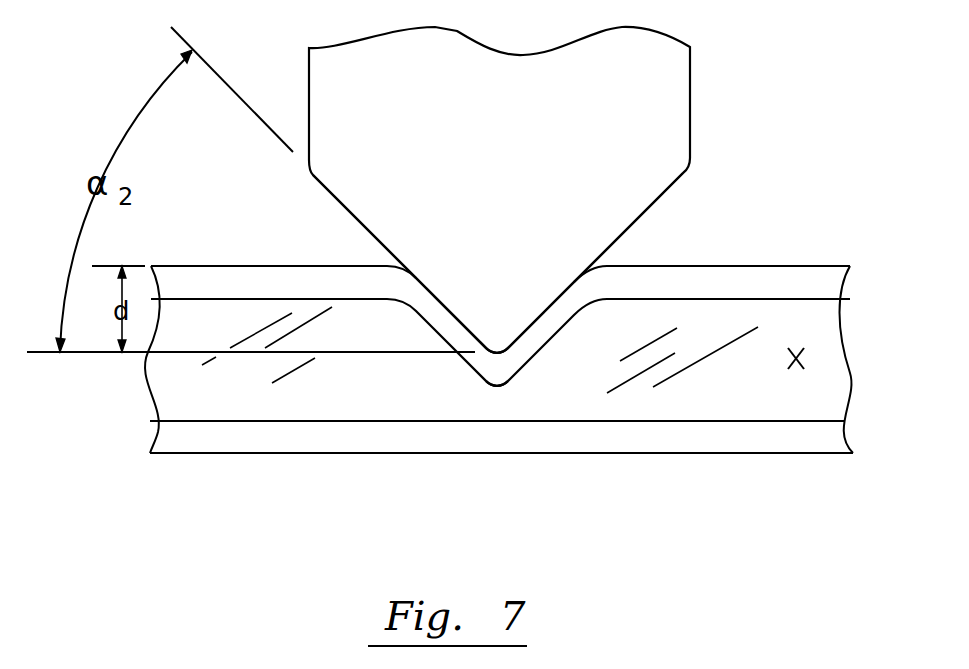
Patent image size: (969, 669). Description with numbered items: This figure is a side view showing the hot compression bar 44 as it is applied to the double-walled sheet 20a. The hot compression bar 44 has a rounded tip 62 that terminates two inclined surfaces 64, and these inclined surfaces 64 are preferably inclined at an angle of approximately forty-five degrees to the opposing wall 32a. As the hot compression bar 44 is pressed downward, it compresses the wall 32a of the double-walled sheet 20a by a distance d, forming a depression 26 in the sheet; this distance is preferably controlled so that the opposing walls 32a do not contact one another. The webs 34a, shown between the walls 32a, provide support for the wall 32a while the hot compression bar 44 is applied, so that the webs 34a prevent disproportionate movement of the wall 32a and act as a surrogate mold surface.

The hot compression bar 44 is at (692, 96).
The inclined surfaces 64 is at (338, 200).
The rounded tip 62 is at (502, 352).
The double-walled sheet 20a is at (315, 456).
The wall 32a is at (723, 264).
The webs 34a is at (806, 355).
The groove 26 is at (502, 352).